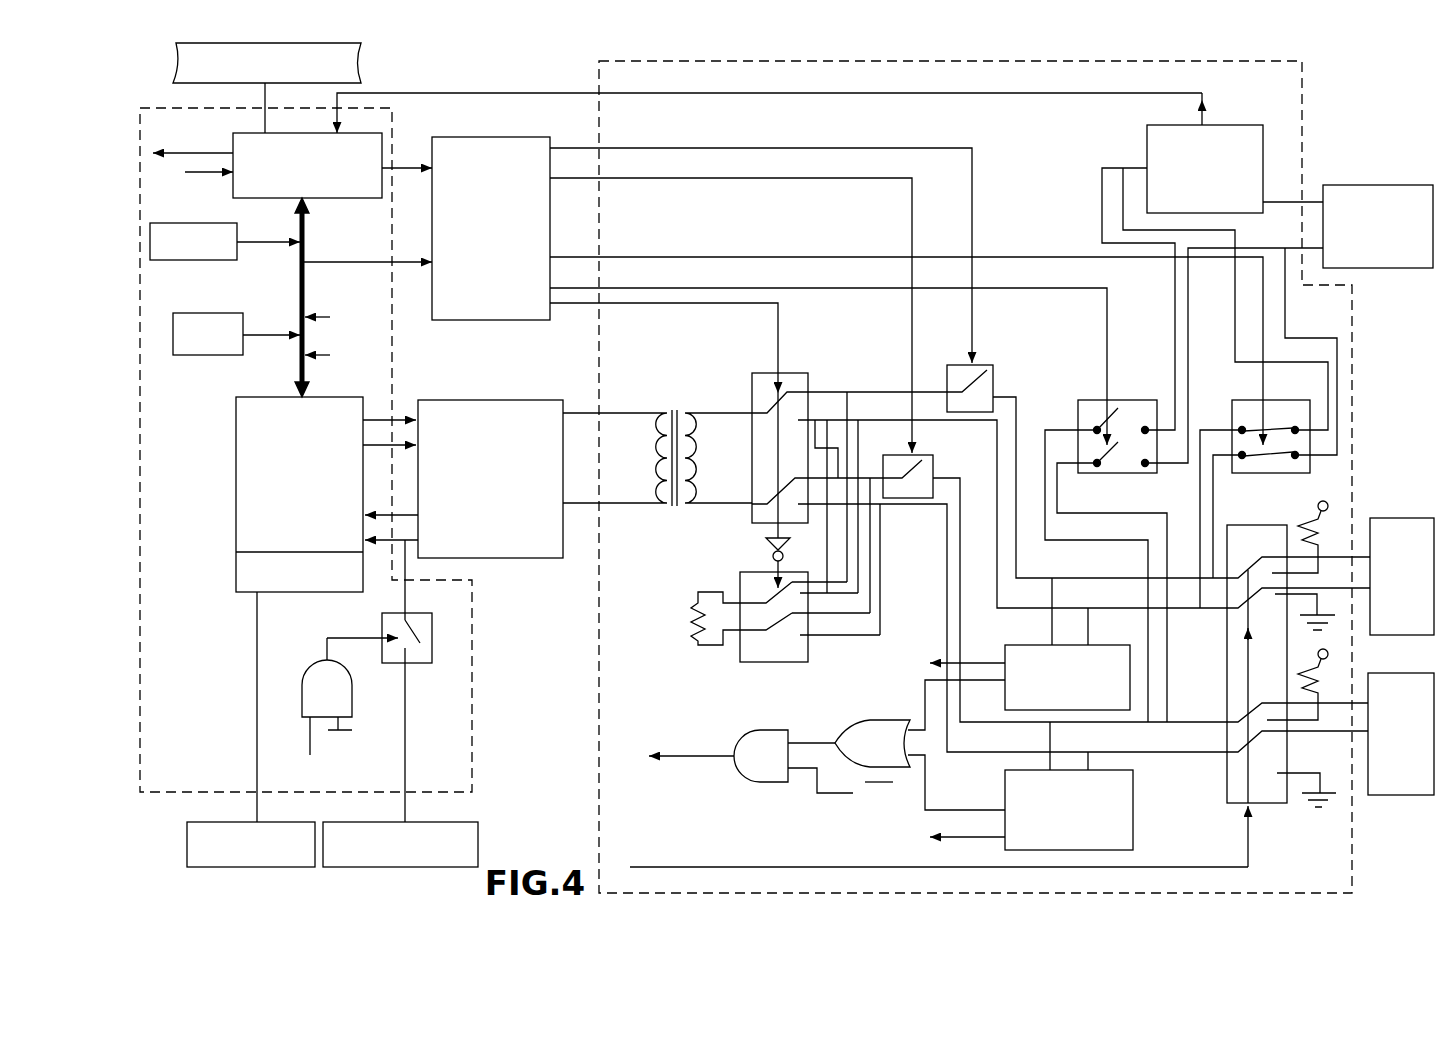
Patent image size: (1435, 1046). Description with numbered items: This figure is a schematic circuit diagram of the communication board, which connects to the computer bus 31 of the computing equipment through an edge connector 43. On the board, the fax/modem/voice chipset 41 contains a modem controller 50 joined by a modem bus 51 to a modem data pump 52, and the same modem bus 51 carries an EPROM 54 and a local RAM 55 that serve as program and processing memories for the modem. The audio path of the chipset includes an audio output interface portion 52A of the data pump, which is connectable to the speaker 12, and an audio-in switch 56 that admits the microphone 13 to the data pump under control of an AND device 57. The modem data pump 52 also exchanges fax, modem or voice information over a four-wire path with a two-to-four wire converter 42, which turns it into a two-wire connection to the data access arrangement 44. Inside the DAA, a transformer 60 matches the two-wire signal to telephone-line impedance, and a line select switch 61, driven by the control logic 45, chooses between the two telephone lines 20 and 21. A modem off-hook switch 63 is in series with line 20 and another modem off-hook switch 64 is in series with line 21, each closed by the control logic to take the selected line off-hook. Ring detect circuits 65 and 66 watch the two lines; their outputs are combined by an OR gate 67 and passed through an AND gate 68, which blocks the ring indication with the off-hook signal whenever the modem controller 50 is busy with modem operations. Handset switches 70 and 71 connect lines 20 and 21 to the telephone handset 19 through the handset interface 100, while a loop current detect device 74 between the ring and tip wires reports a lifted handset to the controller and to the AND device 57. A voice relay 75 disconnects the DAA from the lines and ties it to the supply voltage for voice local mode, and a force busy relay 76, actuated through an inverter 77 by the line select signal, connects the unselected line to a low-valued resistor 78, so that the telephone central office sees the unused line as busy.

The speaker 12 is at (270, 868).
The microphone 13 is at (478, 845).
The telephone handset 19 is at (1365, 185).
The telephone line 20 is at (1400, 518).
The telephone line 21 is at (1393, 795).
The computer bus 31 is at (172, 78).
The fax/modem/voice chipset 41 is at (188, 797).
The 2/4 converter 42 is at (495, 559).
The edge connector 43 is at (264, 99).
The data access arrangement (DAA) 44 is at (594, 738).
The control logic 45 is at (455, 321).
The modem controller 50 is at (325, 199).
The modem bus 51 is at (301, 290).
The modem data pump 52 is at (244, 442).
The audio output interface portion 52A is at (240, 581).
The EPROM 54 is at (195, 261).
The local RAM 55 is at (210, 356).
The audio-in switch 56 is at (380, 623).
The AND device 57 is at (308, 667).
The transformer 60 is at (673, 406).
The line select switch 61 is at (752, 392).
The modem off-hook switch 63 is at (993, 375).
The modem off-hook switch 64 is at (933, 468).
The ring detect circuit 65 is at (1017, 645).
The ring detect circuit 66 is at (1005, 793).
The OR gate 67 is at (876, 718).
The AND gate 68 is at (752, 782).
The handset switch 70 is at (1232, 415).
The handset switch 71 is at (1078, 410).
The loop current detect device 74 is at (1147, 152).
The voice relay 75 is at (1227, 687).
The relay 76 is at (778, 663).
The inverter 77 is at (768, 548).
The resistor R1 78 is at (695, 643).
The handset interface 100 is at (1313, 164).